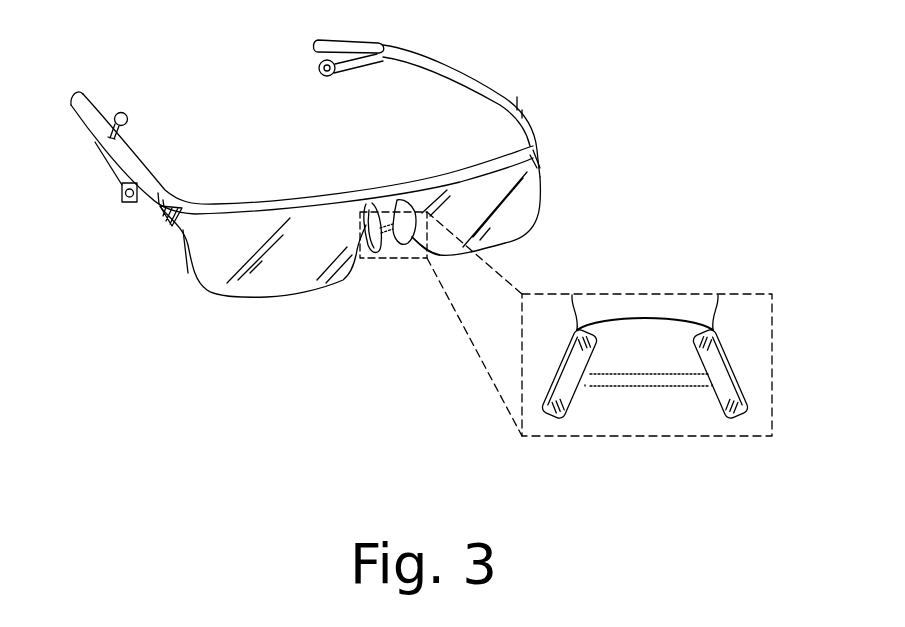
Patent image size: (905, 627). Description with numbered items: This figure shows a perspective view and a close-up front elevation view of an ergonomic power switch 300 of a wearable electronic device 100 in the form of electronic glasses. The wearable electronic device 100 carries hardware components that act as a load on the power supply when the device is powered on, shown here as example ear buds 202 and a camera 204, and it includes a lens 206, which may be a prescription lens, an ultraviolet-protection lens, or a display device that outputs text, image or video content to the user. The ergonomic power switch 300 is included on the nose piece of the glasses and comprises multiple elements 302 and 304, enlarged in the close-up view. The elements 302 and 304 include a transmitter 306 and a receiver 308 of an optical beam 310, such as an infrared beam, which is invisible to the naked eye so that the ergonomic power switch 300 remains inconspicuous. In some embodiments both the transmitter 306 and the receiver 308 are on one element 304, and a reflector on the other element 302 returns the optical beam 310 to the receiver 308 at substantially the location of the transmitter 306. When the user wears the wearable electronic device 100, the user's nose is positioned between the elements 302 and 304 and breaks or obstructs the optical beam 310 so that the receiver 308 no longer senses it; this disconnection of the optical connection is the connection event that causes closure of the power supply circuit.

The wearable electronic device 100 is at (536, 66).
The ear buds 202 is at (320, 62).
The camera 204 is at (126, 197).
The lens 206 is at (250, 227).
The ergonomic power switch 300 is at (357, 208).
The element 302 is at (546, 398).
The element 304 is at (747, 396).
The transmitter 306 is at (585, 388).
The receiver 308 is at (712, 388).
The optical beam 310 is at (650, 383).